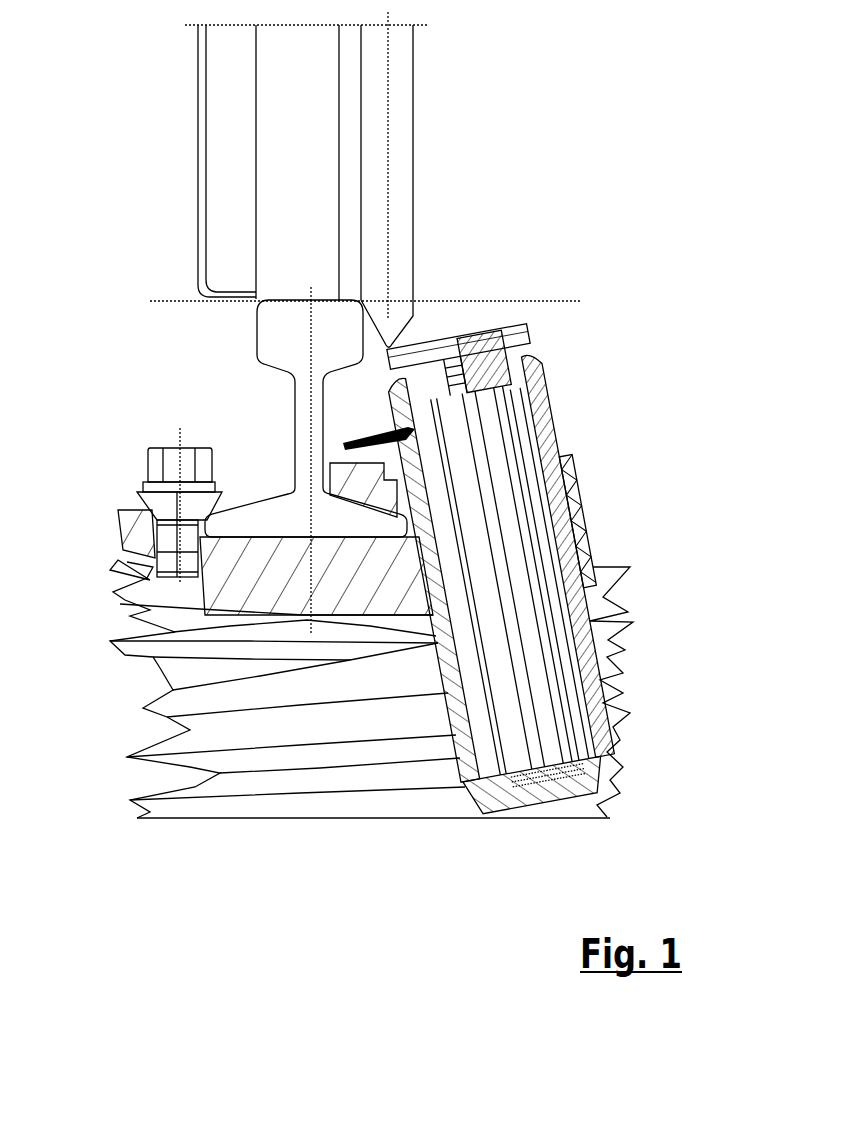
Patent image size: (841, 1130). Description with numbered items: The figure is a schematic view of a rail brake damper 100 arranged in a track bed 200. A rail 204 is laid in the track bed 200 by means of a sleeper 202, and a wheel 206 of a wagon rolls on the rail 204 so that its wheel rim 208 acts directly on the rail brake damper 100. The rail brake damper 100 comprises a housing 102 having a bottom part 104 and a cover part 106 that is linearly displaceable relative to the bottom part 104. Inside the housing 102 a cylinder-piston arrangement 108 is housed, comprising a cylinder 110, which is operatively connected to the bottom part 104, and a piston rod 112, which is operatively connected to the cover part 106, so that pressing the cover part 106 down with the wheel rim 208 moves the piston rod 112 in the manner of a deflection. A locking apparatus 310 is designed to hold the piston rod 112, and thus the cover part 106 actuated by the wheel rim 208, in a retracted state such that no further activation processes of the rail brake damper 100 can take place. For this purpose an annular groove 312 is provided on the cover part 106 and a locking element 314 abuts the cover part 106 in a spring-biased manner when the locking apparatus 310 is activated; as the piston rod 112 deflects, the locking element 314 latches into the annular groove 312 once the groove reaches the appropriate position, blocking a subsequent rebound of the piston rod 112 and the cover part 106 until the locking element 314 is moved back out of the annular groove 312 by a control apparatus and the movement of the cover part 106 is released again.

The rail brake damper 100 is at (593, 267).
The housing 102 is at (637, 330).
The bottom part 104 is at (592, 717).
The cover part 106 is at (533, 452).
The cylinder-piston arrangement 108 is at (510, 562).
The cylinder 110 is at (537, 667).
The piston rod 112 is at (483, 350).
The track bed 200 is at (365, 767).
The sleeper 202 is at (263, 572).
The rail 204 is at (278, 335).
The wheel 206 is at (227, 76).
The wheel rim 208 is at (400, 317).
The locking apparatus 310 is at (357, 412).
The annular groove 312 is at (450, 418).
The locking element 314 is at (345, 446).